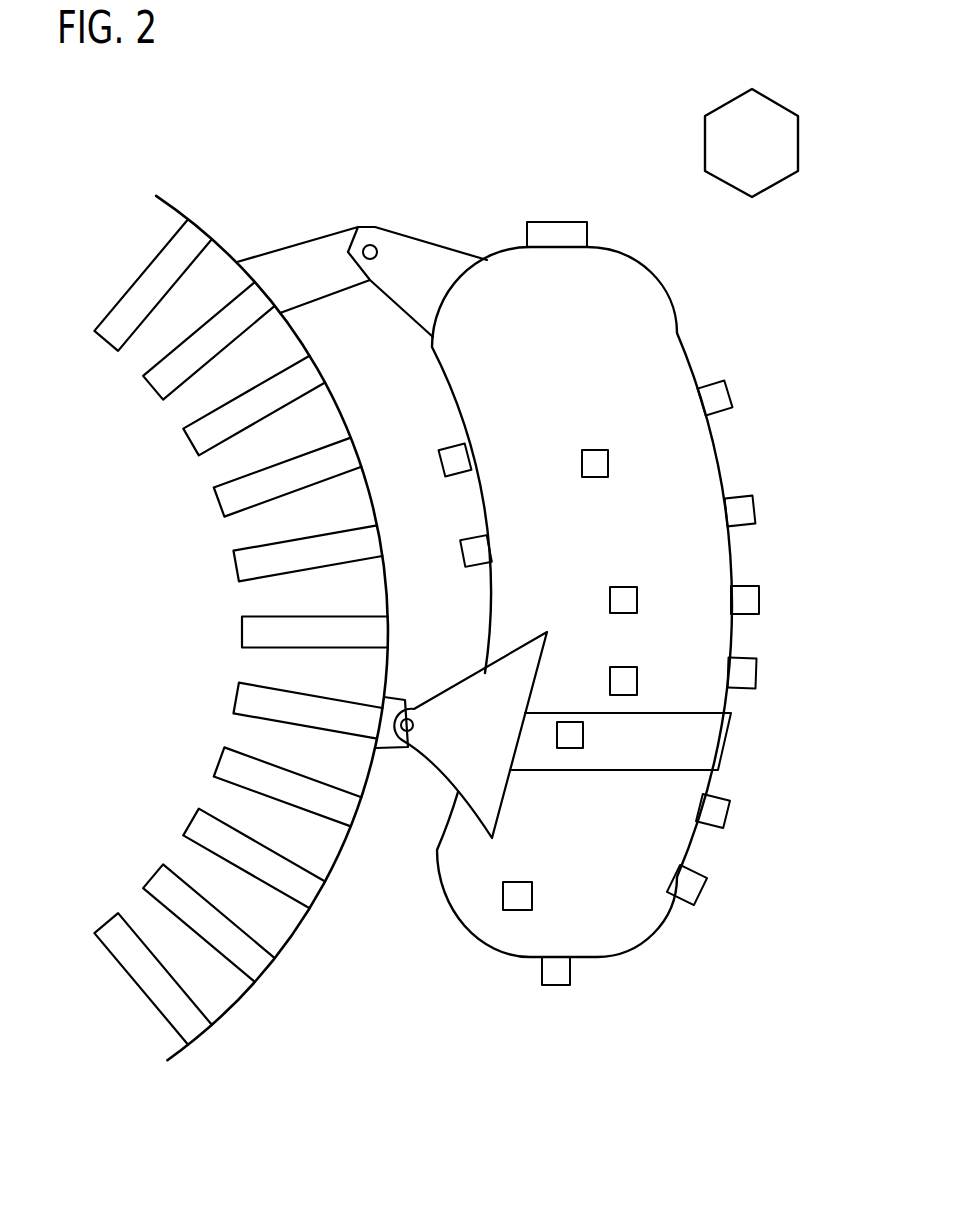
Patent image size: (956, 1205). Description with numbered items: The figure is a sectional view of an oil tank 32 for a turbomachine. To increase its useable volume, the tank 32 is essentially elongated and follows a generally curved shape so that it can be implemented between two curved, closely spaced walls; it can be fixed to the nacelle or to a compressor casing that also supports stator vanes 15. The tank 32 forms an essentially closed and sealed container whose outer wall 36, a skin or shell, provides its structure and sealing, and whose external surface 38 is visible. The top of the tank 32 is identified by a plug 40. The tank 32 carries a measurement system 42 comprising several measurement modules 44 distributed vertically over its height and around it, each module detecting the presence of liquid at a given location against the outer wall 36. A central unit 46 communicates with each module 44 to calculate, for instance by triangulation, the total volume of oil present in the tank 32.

The stator vanes 15 is at (235, 702).
The oil tank 32 is at (427, 995).
The outer wall 36 is at (678, 337).
The external surface 38 is at (545, 329).
The plug 40 is at (557, 233).
The measurement system 42 is at (408, 173).
The measurement modules 44 is at (442, 448).
The central unit 46 is at (767, 155).